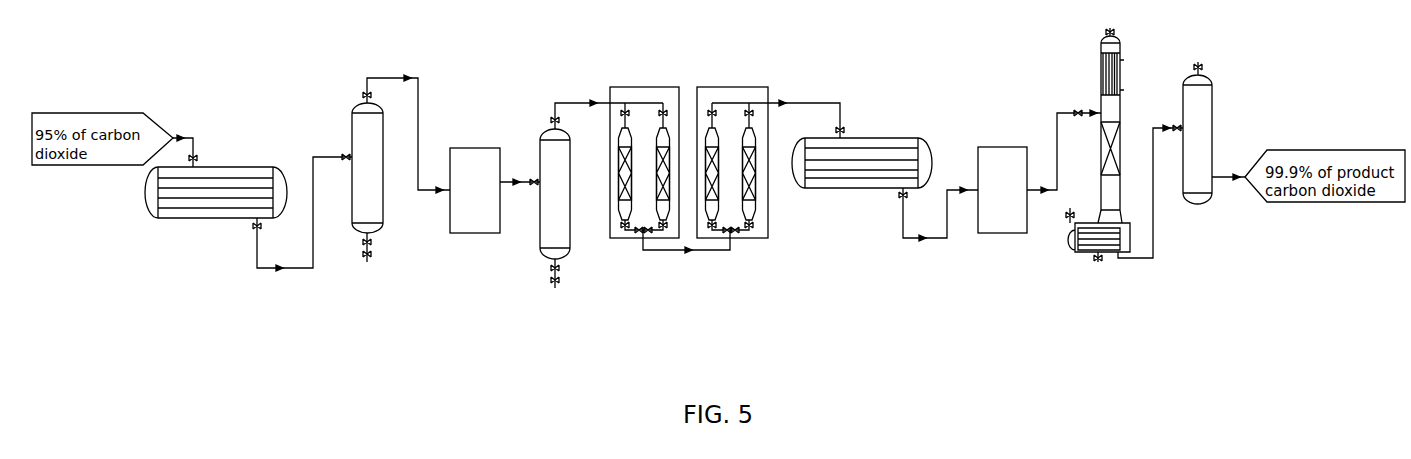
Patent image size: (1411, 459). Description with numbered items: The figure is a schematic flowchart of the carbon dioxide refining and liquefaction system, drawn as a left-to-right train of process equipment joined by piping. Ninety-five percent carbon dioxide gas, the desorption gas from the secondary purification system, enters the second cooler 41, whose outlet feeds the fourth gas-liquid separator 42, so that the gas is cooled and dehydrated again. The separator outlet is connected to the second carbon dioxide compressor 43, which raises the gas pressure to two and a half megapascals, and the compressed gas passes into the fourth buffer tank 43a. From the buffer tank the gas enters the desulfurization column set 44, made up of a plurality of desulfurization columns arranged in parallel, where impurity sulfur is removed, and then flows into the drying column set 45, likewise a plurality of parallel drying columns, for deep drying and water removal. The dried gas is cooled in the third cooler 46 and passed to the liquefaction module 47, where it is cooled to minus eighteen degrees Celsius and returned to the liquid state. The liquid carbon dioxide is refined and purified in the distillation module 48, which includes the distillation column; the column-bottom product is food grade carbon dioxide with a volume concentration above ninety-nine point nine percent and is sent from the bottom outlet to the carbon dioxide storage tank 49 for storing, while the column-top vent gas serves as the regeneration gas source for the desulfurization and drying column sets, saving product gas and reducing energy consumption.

The second cooler 41 is at (218, 218).
The fourth gas-liquid separator 42 is at (352, 227).
The second carbon dioxide compressor 43 is at (457, 217).
The fourth buffer tank 43a is at (540, 257).
The desulfurization column set 44 is at (628, 238).
The drying column set 45 is at (730, 238).
The third cooler 46 is at (857, 188).
The liquefaction module 47 is at (1002, 233).
The distillation module 48 is at (1099, 250).
The carbon dioxide storage tank 49 is at (1198, 204).